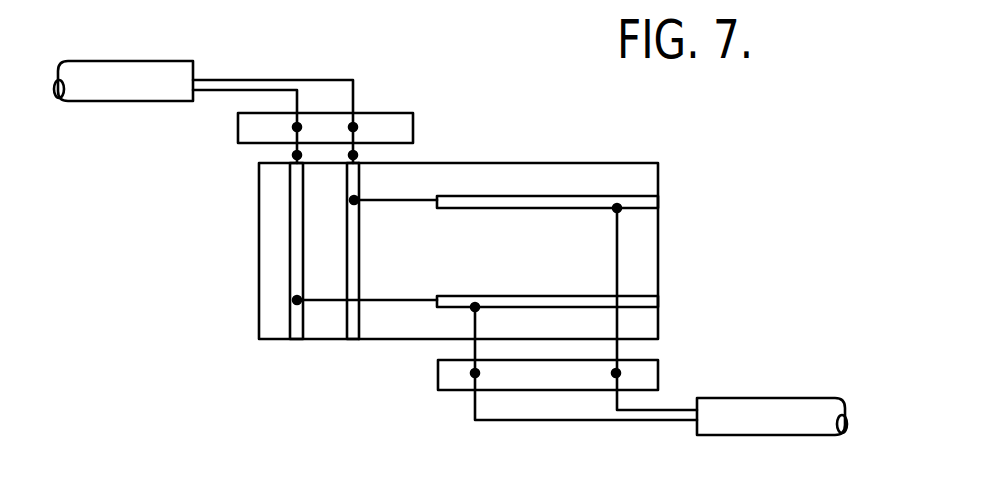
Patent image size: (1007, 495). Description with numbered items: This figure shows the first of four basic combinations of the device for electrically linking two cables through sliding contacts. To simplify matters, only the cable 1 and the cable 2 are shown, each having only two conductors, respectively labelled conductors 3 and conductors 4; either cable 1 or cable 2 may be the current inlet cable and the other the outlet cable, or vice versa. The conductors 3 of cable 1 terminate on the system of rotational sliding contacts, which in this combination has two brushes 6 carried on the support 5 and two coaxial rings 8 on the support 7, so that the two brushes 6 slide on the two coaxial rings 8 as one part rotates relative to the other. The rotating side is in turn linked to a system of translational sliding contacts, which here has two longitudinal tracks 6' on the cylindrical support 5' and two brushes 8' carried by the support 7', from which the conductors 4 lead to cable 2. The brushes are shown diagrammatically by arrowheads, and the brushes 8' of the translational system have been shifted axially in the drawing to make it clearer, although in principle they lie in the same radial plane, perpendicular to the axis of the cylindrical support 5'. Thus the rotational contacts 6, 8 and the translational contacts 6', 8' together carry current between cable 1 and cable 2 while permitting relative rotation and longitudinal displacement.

The cable 1 is at (112, 73).
The cable 2 is at (760, 417).
The conductors 3 is at (225, 88).
The conductors 4 is at (651, 418).
The support 5 is at (335, 98).
The cylindrical support 5' is at (537, 250).
The brushes 6 is at (276, 158).
The longitudinal tracks 6' is at (546, 207).
The support 7 is at (287, 277).
The support 7' is at (519, 397).
The coaxial rings 8 is at (325, 251).
The brushes 8' is at (547, 245).